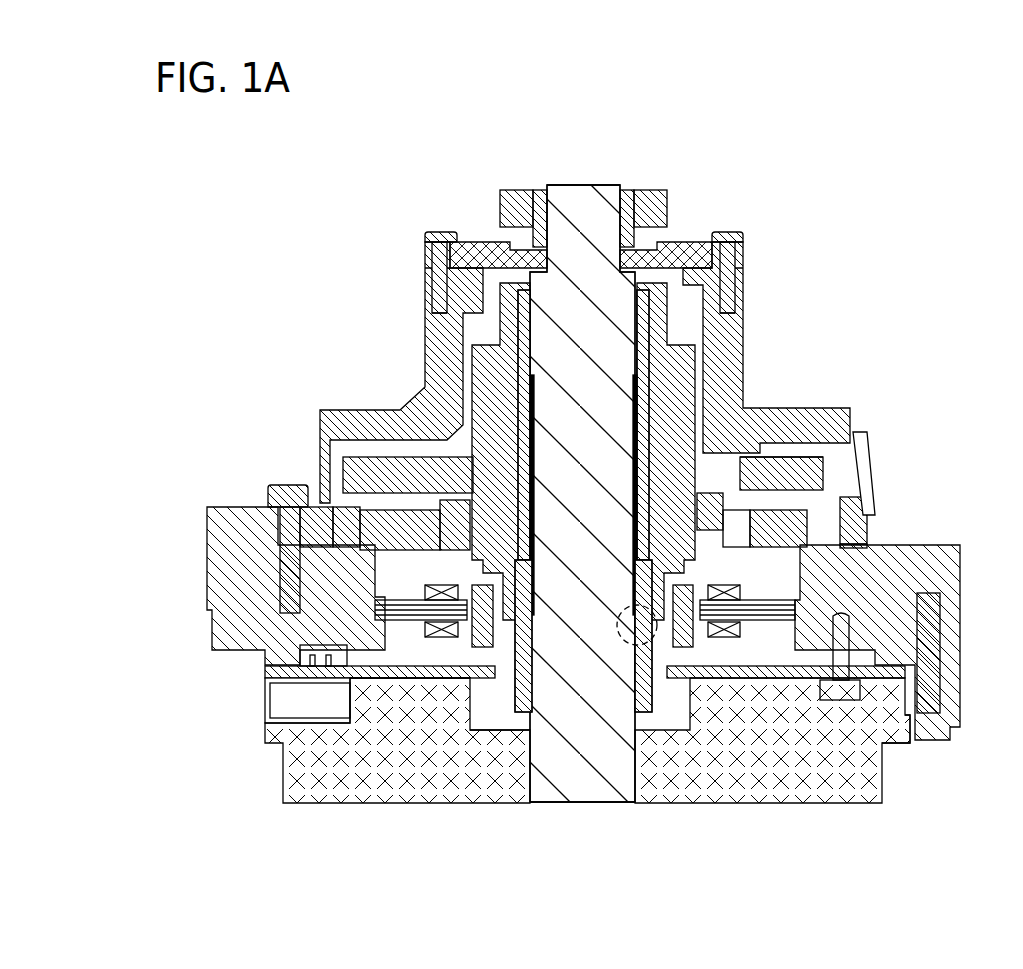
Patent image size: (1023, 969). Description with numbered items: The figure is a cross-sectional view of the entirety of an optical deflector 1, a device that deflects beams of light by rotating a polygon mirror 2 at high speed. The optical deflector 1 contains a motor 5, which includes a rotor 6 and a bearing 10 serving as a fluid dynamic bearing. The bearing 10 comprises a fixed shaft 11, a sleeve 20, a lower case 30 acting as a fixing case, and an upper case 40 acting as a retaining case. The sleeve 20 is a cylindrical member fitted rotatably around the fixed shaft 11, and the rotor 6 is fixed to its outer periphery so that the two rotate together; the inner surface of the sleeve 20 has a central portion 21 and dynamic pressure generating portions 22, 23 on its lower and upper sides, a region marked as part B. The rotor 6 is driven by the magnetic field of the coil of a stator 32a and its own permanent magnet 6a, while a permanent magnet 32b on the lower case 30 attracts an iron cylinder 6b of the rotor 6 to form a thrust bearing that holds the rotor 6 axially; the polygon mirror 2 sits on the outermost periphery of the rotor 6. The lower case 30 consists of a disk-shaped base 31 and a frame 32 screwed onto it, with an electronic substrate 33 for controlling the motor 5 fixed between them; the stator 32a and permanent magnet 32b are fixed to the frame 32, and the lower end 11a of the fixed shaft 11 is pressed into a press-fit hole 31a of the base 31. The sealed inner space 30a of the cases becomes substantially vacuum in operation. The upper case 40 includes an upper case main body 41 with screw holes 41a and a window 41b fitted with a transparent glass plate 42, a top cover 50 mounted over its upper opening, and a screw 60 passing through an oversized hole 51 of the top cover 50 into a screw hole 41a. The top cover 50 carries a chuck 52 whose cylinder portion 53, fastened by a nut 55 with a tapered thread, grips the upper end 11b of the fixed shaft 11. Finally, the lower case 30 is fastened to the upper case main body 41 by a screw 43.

The optical deflector 1 is at (256, 157).
The motor 5 is at (268, 193).
The bearing 10 is at (302, 235).
The polygon mirror 2 is at (847, 468).
The rotor 6 is at (757, 505).
The permanent magnet 6a is at (733, 640).
The iron cylinder 6b is at (790, 440).
The fixed shaft 11 is at (603, 762).
The lower end 11a is at (560, 768).
The upper end 11b is at (585, 210).
The sleeve 20 is at (640, 313).
The central portion 21 is at (643, 420).
The dynamic pressure generating portion 22 is at (649, 680).
The dynamic pressure generating portion 23 is at (640, 343).
The lower case 30 is at (230, 776).
The inner space 30a is at (440, 655).
The base 31 is at (357, 812).
The press-fit hole 31a is at (528, 785).
The frame 32 is at (218, 662).
The stator 32a is at (770, 672).
The permanent magnet 32b is at (862, 447).
The electronic substrate 33 is at (905, 737).
The upper case 40 is at (296, 306).
The upper case main body 41 is at (361, 394).
The screw hole 41a is at (437, 300).
The window 41b is at (850, 477).
The transparent glass plate 42 is at (875, 506).
The screw 43 is at (272, 487).
The top cover 50 is at (410, 186).
The hole 51 is at (437, 272).
The chuck 52 is at (524, 186).
The cylinder portion 53 is at (515, 205).
The nut 55 is at (665, 192).
The screw 60 is at (438, 236).
The part B is at (655, 642).